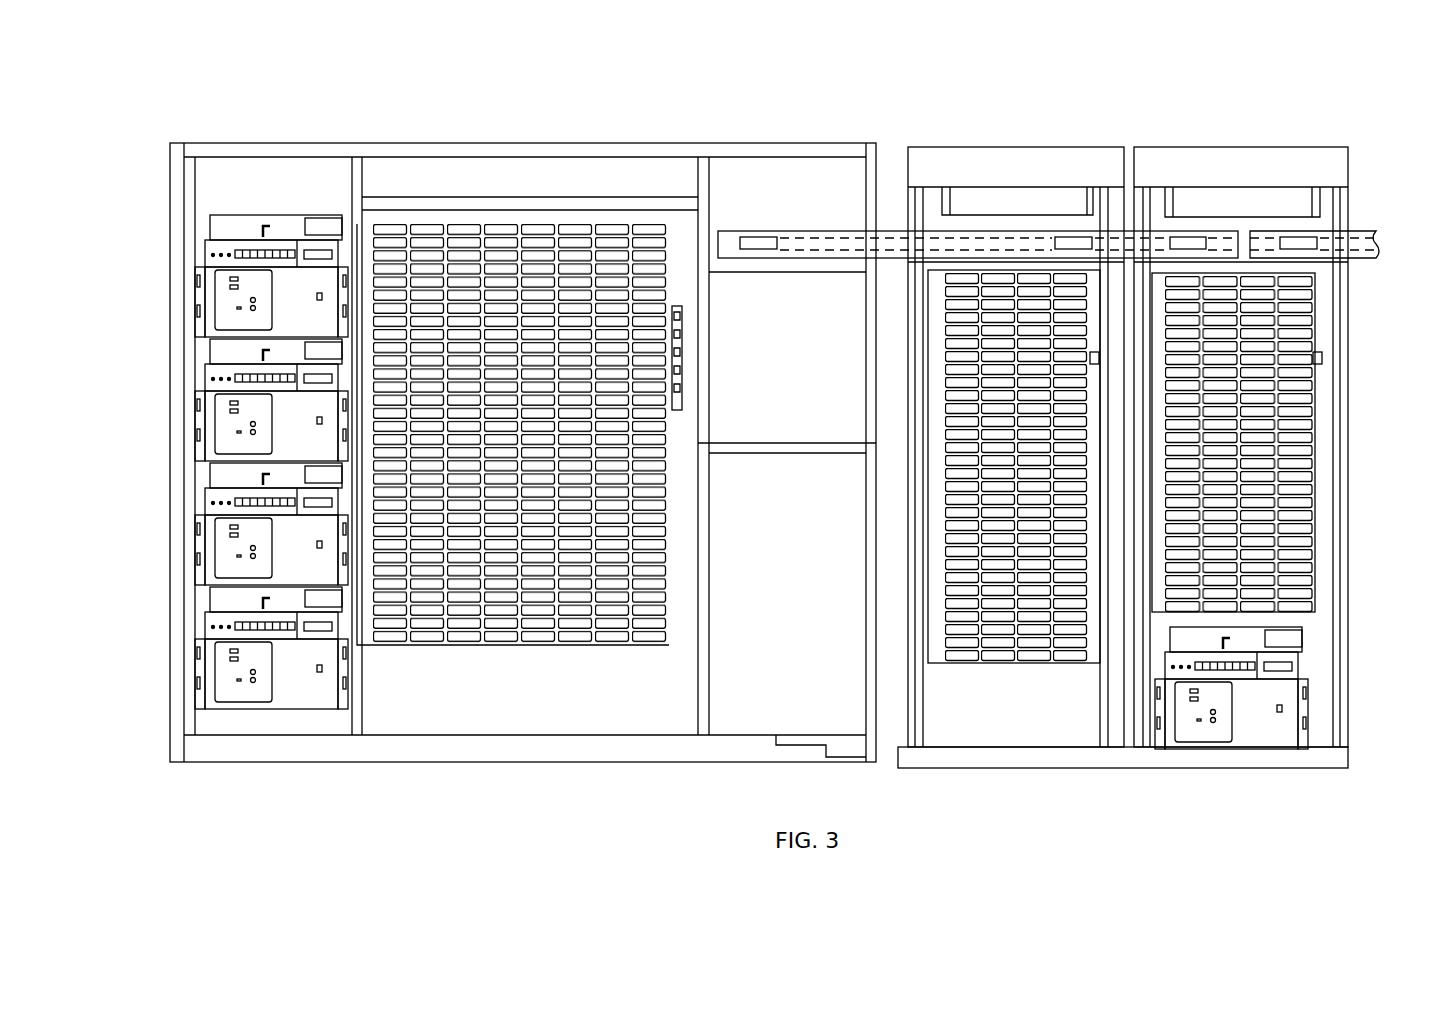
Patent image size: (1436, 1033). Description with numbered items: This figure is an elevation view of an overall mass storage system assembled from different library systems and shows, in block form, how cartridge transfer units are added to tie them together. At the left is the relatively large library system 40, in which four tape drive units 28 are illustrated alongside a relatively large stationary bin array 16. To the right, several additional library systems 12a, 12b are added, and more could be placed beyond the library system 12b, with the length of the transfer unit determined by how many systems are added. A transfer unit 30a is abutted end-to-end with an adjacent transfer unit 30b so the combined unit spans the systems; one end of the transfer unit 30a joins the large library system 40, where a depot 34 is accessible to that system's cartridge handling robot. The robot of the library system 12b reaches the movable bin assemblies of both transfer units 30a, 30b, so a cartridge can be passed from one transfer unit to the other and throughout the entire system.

The large library system 40 is at (600, 134).
The additional library system 12a is at (1010, 138).
The additional library system 12b is at (1227, 138).
The stationary bin array 16 is at (500, 652).
The tape drive unit 28 is at (217, 412).
The transfer unit 30a is at (891, 228).
The transfer unit 30b is at (1372, 228).
The depot 34 is at (766, 228).